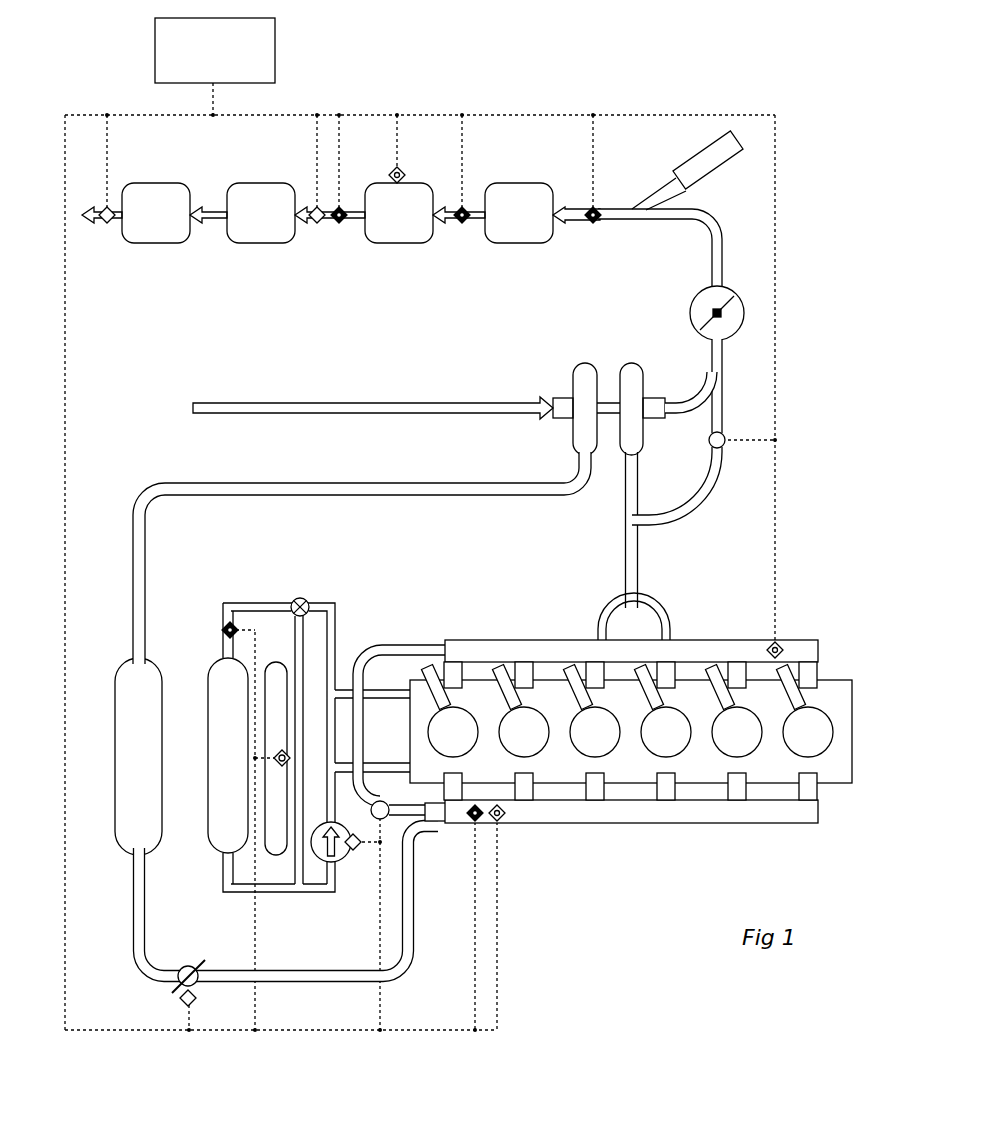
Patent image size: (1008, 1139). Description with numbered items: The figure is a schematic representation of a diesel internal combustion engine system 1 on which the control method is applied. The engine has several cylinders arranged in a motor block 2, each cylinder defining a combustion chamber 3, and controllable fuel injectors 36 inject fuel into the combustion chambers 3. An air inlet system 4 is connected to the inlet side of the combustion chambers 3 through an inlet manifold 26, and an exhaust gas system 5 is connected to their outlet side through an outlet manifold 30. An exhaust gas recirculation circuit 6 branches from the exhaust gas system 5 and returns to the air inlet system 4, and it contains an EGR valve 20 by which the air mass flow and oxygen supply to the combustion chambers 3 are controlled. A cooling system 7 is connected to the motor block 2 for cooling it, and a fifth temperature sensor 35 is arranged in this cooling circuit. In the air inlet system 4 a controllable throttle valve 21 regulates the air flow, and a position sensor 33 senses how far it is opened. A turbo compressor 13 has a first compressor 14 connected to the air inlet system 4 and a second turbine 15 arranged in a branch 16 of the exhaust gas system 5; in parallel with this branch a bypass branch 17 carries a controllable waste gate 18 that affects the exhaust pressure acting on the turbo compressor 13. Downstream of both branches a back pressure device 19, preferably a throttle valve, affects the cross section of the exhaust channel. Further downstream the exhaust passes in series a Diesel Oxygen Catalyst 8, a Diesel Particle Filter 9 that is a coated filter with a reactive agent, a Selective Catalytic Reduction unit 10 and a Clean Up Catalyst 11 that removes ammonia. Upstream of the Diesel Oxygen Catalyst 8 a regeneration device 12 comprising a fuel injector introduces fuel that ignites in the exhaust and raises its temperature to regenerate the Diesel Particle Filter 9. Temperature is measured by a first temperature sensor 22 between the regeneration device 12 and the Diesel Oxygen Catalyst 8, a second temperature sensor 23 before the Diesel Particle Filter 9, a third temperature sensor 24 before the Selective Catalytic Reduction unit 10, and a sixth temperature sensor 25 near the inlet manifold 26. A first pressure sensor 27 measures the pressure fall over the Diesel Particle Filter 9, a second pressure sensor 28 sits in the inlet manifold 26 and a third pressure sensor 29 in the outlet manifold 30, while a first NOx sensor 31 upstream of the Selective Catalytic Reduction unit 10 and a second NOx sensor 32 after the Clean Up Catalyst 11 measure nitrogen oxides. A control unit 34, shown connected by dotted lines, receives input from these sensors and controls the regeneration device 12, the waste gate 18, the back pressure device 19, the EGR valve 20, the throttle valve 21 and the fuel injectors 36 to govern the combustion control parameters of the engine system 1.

The diesel internal combustion engine system 1 is at (645, 80).
The motor block 2 is at (647, 692).
The combustion chamber 3 is at (822, 736).
The air inlet system 4 is at (130, 617).
The exhaust gas system 5 is at (730, 232).
The exhaust gas recirculation circuit 6 is at (395, 643).
The cooling system 7 is at (221, 874).
The Diesel Oxygen Catalyst 8 is at (523, 233).
The Diesel Particle Filter 9 is at (403, 233).
The Selective Catalytic Reduction unit 10 is at (265, 233).
The Clean Up Catalyst 11 is at (160, 233).
The regeneration device 12 is at (700, 163).
The turbo compressor 13 is at (452, 374).
The first compressor 14 is at (576, 388).
The second turbine 15 is at (637, 378).
The branch 16 is at (628, 492).
The bypass branch 17 is at (708, 484).
The waste gate 18 is at (722, 437).
The back pressure device 19 is at (738, 326).
The exhaust gas recirculation valve 20 is at (380, 800).
The throttle valve 21 is at (193, 967).
The first temperature sensor 22 is at (593, 225).
The second temperature sensor 23 is at (460, 225).
The third temperature sensor 24 is at (340, 225).
The sixth temperature sensor 25 is at (475, 822).
The inlet manifold 26 is at (700, 824).
The first pressure sensor 27 is at (400, 171).
The second pressure sensor 28 is at (500, 822).
The third pressure sensor 29 is at (778, 650).
The outlet manifold 30 is at (700, 642).
The first NOx sensor 31 is at (318, 226).
The second NOx sensor 32 is at (107, 225).
The position sensor 33 is at (192, 1006).
The control unit 34 is at (265, 53).
The fifth temperature sensor 35 is at (226, 628).
The fuel injectors 36 is at (505, 668).